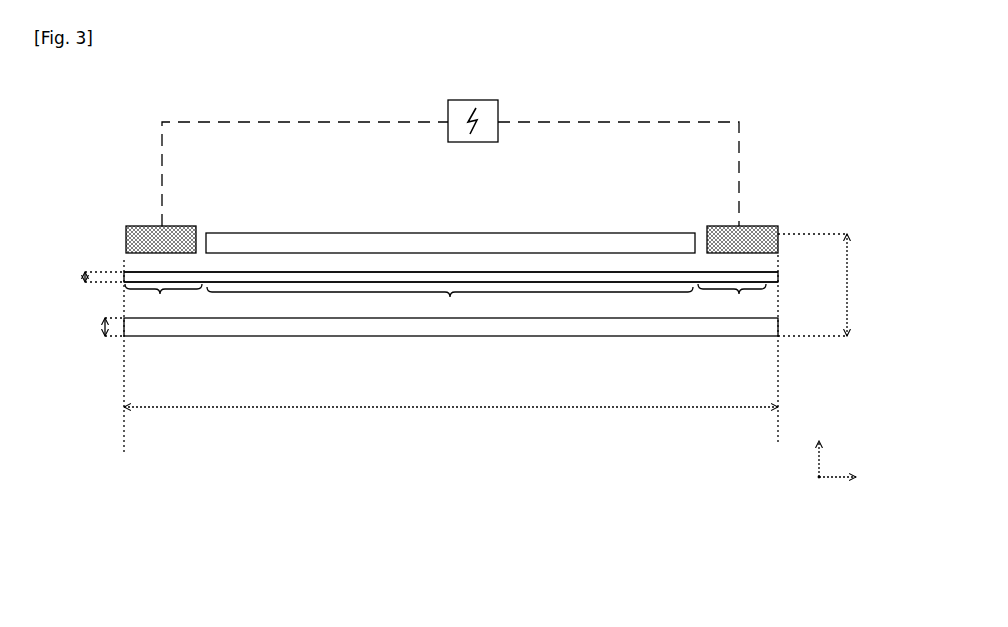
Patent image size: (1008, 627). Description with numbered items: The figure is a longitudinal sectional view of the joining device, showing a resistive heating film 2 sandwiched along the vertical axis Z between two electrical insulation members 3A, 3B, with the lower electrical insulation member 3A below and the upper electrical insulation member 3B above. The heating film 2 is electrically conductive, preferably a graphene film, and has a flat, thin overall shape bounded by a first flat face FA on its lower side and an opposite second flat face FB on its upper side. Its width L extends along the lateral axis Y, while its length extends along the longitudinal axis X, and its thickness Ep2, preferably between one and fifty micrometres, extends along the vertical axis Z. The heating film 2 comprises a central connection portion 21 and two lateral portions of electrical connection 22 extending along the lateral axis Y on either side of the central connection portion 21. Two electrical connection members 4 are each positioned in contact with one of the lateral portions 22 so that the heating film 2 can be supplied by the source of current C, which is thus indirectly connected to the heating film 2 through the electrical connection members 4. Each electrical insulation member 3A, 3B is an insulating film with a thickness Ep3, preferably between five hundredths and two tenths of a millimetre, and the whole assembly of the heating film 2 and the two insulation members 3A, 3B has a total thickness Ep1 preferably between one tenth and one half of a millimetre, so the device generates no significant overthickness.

The source of current C is at (498, 114).
The electrical connection members 4 is at (127, 241).
The electrical insulation member 3B is at (389, 233).
The resistive heating film 2 is at (777, 277).
The second flat face FB is at (768, 267).
The first flat face FA is at (770, 288).
The lateral portions of electrical connection 22 is at (445, 300).
The central connection portion 21 is at (450, 302).
The electrical insulation member 3A is at (387, 336).
The thickness of the assembly Ep1 is at (827, 285).
The thickness of the heating film Ep2 is at (84, 278).
The thickness of the electrical insulation member Ep3 is at (95, 327).
The width of the heating film L is at (451, 423).
The longitudinal axis X is at (808, 486).
The lateral axis Y is at (845, 478).
The vertical axis Z is at (818, 445).